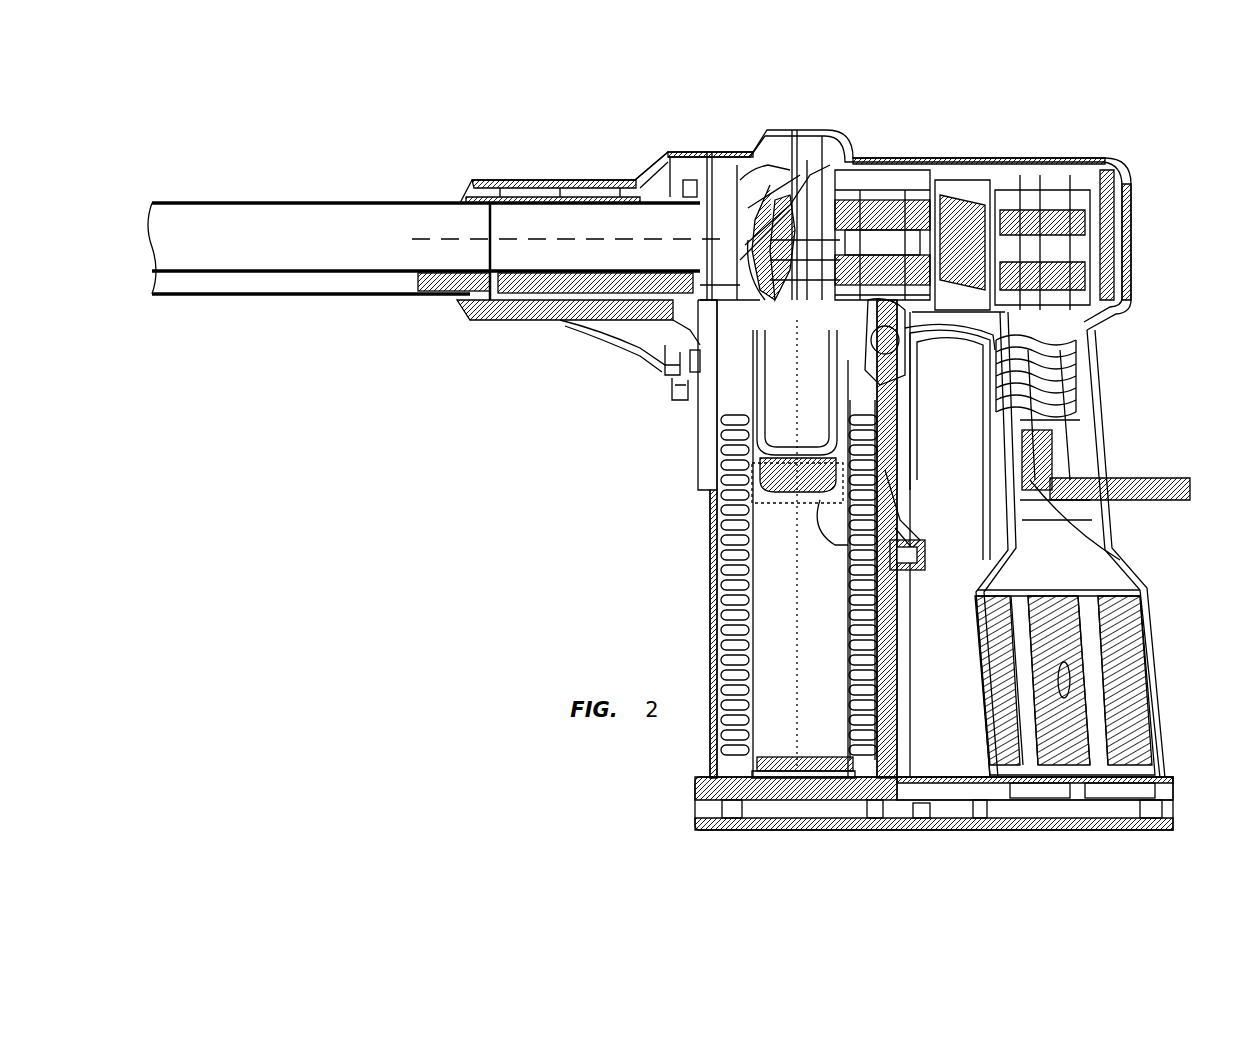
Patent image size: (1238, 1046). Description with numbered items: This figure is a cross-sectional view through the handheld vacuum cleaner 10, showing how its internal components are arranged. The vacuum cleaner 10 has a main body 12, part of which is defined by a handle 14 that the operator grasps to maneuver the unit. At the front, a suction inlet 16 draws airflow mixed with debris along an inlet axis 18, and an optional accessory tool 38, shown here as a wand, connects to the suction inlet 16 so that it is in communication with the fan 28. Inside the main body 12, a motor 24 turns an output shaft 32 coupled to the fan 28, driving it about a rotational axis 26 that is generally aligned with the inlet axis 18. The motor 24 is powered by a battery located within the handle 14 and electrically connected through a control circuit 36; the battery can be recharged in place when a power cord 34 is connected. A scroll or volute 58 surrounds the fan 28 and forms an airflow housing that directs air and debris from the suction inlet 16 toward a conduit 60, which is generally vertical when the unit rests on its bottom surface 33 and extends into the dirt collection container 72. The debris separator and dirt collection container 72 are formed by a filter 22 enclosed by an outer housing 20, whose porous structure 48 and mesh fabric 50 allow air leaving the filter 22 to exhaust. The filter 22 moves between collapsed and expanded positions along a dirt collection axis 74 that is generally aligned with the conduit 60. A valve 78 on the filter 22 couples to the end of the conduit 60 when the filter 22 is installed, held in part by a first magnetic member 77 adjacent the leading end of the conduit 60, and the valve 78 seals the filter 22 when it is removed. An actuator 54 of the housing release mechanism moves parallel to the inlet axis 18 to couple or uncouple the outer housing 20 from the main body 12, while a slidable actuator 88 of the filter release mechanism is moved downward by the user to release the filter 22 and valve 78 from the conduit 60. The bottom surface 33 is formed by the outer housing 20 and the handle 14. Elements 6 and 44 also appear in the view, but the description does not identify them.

The nozzle 6 is at (735, 152).
The vacuum cleaner 10 is at (667, 84).
The main body 12 is at (1018, 152).
The handle 14 is at (1096, 427).
The suction inlet 16 is at (470, 186).
The inlet axis 18 is at (446, 242).
The outer housing 20 is at (690, 664).
The filter 22 is at (898, 682).
The motor 24 is at (900, 175).
The rotational axis 26 is at (745, 235).
The fan 28 is at (700, 300).
The output shaft 32 is at (842, 175).
The bottom surface 33 is at (890, 827).
The power cord 34 is at (1168, 482).
The control circuit 36 is at (770, 190).
The accessory tool 38 is at (238, 225).
The end cap 44 is at (1114, 227).
The porous structure 48 is at (712, 608).
The mesh fabric 50 is at (712, 548).
The actuator 54 is at (672, 365).
The volute 58 is at (765, 335).
The conduit 60 is at (905, 400).
The dirt collection container 72 is at (803, 550).
The dirt collection axis 74 is at (800, 843).
The first magnetic member 77 is at (782, 490).
The valve 78 is at (880, 536).
The actuator 88 is at (922, 490).